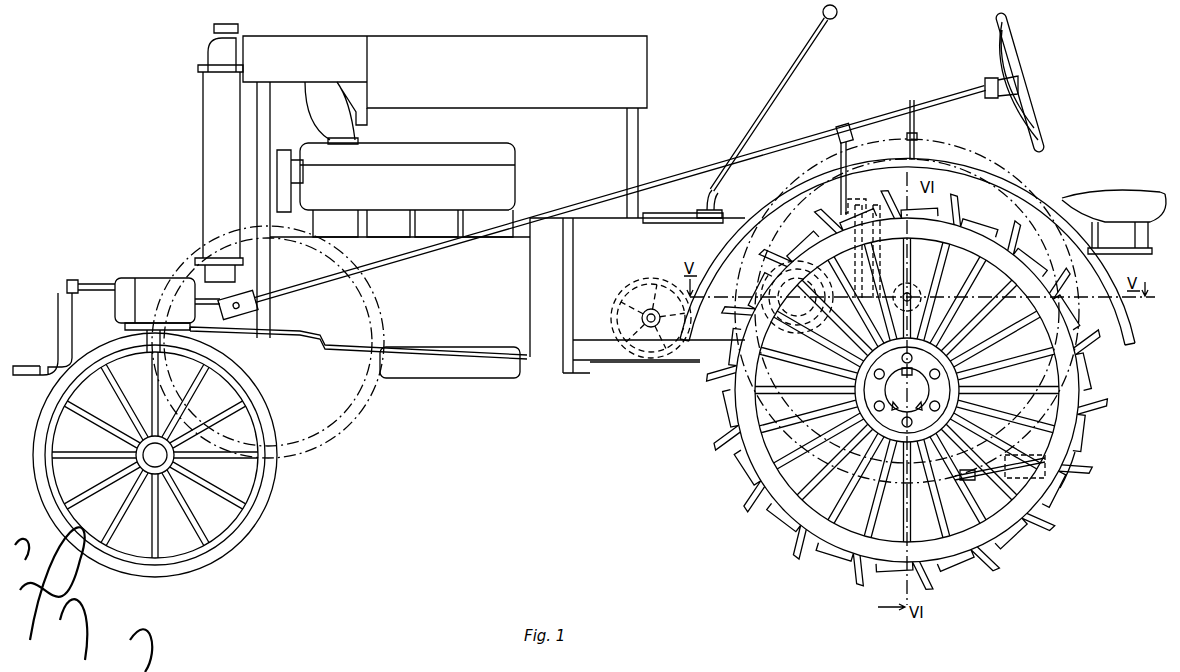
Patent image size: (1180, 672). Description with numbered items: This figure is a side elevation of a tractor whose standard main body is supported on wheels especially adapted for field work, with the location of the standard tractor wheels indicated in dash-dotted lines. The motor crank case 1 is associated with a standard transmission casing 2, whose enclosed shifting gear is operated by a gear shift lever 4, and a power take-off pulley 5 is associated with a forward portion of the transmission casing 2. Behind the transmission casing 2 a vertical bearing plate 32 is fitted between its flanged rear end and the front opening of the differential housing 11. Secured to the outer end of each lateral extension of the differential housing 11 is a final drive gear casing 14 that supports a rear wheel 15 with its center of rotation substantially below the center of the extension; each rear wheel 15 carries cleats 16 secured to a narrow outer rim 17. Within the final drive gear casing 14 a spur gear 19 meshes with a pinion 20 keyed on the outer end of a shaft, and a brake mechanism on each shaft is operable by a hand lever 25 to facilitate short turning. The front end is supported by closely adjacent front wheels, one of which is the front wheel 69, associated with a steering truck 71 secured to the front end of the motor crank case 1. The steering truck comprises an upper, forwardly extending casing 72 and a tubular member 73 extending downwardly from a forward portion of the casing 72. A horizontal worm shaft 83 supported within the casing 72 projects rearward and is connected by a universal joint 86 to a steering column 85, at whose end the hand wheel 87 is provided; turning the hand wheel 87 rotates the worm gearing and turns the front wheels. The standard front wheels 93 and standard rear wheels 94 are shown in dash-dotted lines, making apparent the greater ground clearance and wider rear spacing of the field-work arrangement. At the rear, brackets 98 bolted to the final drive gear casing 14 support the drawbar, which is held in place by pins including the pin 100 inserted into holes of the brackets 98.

The motor crank case 1 is at (483, 275).
The transmission casing 2 is at (590, 362).
The gear shift lever 4 is at (810, 44).
The power take-off pulley 5 is at (643, 356).
The differential housing 11 is at (966, 297).
The final drive gear casing 14 is at (940, 280).
The rear wheel 15 is at (848, 497).
The cleats 16 is at (1052, 531).
The outer rim 17 is at (1076, 452).
The spur gear 19 is at (920, 298).
The pinion 20 is at (907, 284).
The hand lever 25 is at (915, 160).
The bearing plate 32 is at (899, 186).
The front wheel 69 is at (165, 455).
The steering truck 71 is at (97, 330).
The casing 72 is at (147, 278).
The tubular member 73 is at (140, 392).
The worm shaft 83 is at (206, 300).
The steering column 85 is at (706, 173).
The universal joint 86 is at (233, 312).
The hand wheel 87 is at (1012, 36).
The standard tractor front wheels 93 is at (378, 393).
The standard rear wheels 94 is at (1040, 182).
The brackets 98 is at (980, 481).
The pin 100 is at (1025, 462).